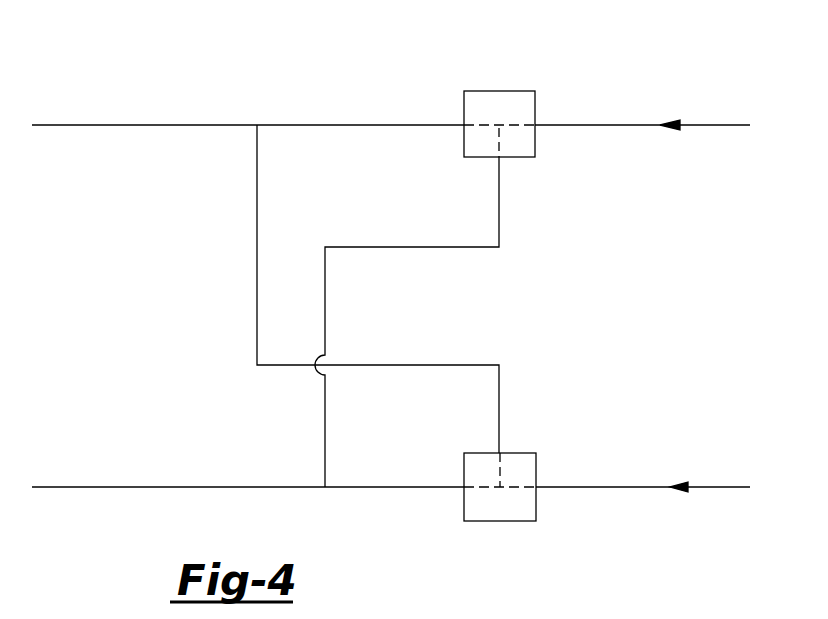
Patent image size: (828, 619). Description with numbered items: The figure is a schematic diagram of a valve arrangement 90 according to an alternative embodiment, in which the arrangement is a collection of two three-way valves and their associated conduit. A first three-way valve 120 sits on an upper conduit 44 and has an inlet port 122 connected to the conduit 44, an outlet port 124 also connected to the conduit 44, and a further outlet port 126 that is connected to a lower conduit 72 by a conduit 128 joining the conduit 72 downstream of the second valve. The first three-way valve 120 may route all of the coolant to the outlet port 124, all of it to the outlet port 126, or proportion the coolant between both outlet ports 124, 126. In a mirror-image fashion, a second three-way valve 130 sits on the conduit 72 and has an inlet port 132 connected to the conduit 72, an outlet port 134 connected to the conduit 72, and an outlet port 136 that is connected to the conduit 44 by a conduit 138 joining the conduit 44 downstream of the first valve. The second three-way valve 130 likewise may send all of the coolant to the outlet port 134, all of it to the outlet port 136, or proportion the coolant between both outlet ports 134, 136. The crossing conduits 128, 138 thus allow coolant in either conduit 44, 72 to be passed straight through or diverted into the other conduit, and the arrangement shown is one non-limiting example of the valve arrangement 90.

The valve arrangement 90 is at (310, 68).
The conduit 44 is at (618, 125).
The conduit 72 is at (621, 487).
The first three-way valve 120 is at (500, 91).
The inlet port 122 is at (535, 125).
The outlet port 124 is at (463, 125).
The outlet port 126 is at (500, 158).
The conduit 128 is at (325, 300).
The second three-way valve 130 is at (500, 521).
The inlet port 132 is at (537, 487).
The outlet port 134 is at (464, 487).
The outlet port 136 is at (500, 453).
The conduit 138 is at (257, 300).